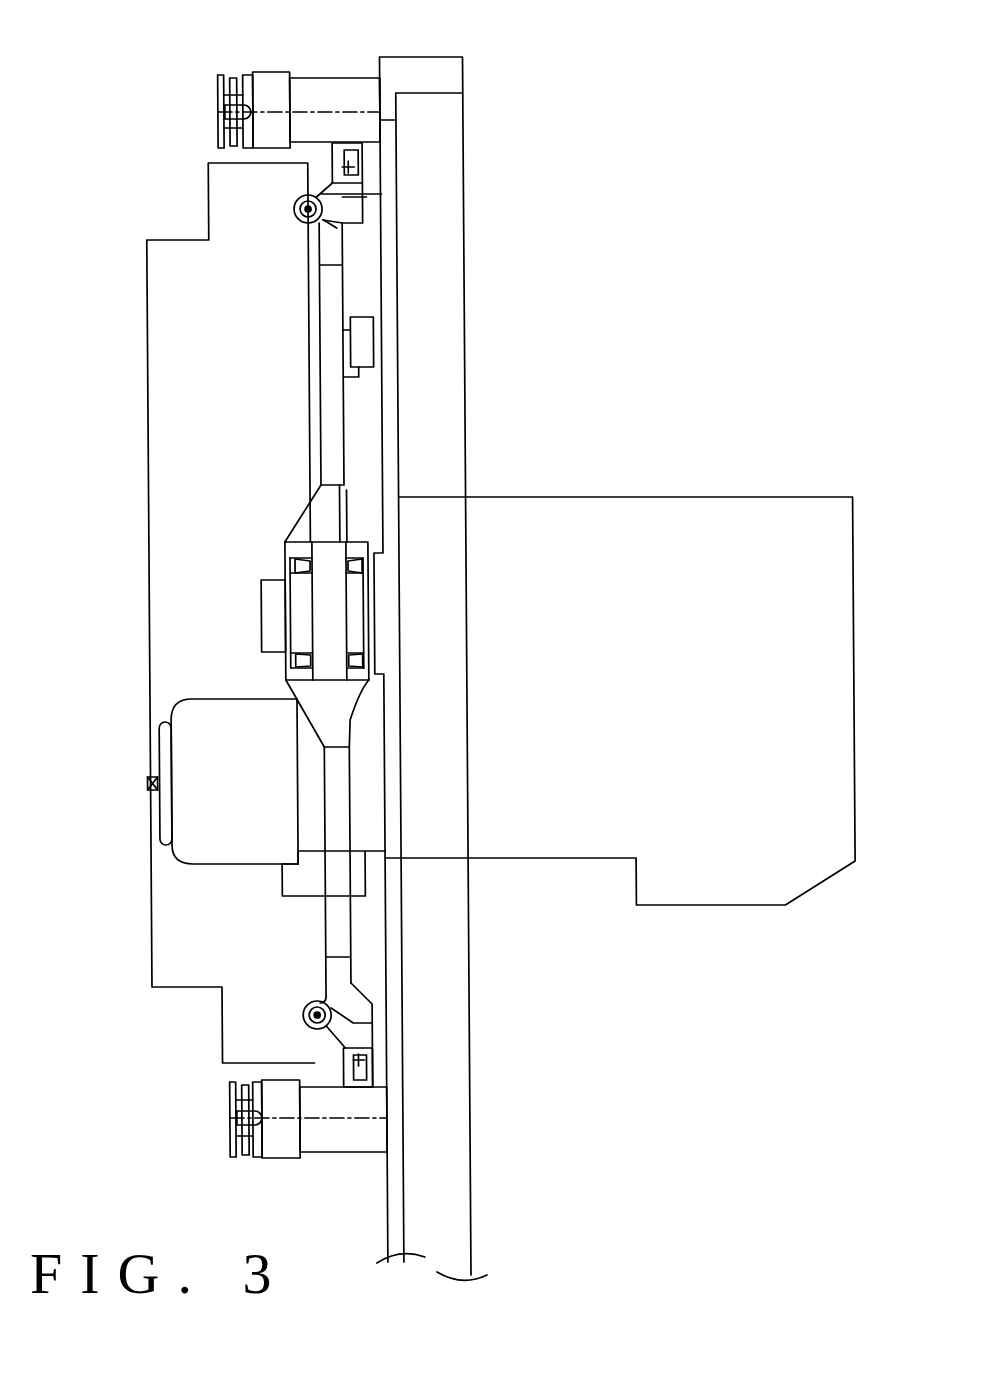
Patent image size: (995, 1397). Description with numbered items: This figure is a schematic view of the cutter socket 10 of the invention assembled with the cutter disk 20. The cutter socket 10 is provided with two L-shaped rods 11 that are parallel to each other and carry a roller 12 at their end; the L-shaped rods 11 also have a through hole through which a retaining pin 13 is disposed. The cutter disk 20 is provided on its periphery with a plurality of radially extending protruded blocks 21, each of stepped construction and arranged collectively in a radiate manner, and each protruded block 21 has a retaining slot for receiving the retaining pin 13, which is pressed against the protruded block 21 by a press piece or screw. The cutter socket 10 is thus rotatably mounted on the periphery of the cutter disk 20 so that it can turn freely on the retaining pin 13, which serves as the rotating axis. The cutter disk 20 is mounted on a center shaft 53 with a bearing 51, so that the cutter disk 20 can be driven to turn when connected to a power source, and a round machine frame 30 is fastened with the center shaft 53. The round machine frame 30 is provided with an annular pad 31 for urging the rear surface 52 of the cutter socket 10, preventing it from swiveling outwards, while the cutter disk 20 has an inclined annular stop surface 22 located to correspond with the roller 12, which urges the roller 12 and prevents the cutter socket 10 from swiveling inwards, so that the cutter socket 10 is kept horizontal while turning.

The cutter socket 10 is at (326, 93).
The L-shaped rods 11 is at (362, 197).
The roller 12 is at (305, 215).
The retaining pin 13 is at (351, 167).
The cutter disk 20 is at (334, 427).
The protruded blocks 21 is at (385, 195).
The annular stop surface 22 is at (327, 220).
The round machine frame 30 is at (395, 466).
The annular pad 31 is at (384, 84).
The bearing 51 is at (300, 530).
The rear surface 52 is at (381, 122).
The center shaft 53 is at (262, 618).